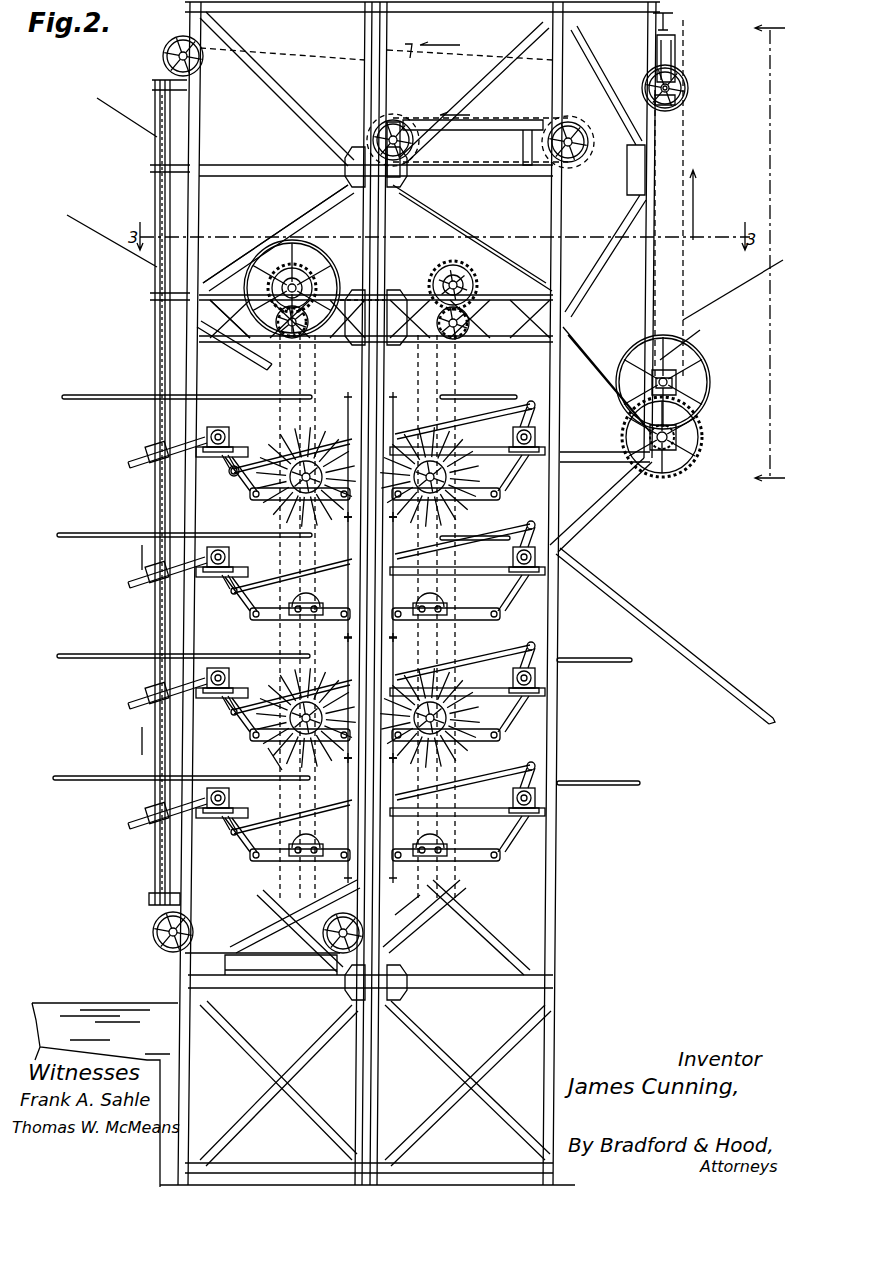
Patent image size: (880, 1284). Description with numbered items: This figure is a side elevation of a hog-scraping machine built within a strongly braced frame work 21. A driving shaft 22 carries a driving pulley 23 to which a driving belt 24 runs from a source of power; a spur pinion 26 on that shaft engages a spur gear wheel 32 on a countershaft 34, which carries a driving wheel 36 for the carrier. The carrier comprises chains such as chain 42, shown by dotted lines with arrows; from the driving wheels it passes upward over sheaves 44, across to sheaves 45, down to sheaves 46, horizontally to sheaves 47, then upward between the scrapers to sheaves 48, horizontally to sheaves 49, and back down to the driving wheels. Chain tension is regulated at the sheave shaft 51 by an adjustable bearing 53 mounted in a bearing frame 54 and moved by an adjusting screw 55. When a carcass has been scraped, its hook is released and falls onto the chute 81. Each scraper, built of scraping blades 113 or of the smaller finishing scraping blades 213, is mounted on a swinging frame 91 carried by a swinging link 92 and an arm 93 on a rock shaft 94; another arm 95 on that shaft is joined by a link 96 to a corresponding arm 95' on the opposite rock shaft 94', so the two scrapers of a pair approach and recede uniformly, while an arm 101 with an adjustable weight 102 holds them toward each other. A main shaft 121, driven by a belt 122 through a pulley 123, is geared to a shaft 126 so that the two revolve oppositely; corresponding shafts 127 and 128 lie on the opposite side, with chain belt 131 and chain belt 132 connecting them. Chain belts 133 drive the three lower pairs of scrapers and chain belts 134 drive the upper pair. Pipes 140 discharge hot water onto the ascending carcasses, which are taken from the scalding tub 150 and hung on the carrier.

The frame work 21 is at (340, 10).
The driving shaft 22 is at (680, 380).
The driving pulley 23 is at (700, 350).
The driving belt 24 is at (733, 290).
The spur pinion 26 is at (694, 336).
The spur gear wheel 32 is at (682, 470).
The countershaft 34 is at (690, 437).
The driving wheel 36 is at (660, 455).
The carrier chain 42 is at (445, 50).
The sheaves 44 is at (688, 80).
The sheaves 45 is at (165, 62).
The sheaves 46 is at (150, 932).
The sheaves 47 is at (335, 920).
The sheaves 48 is at (398, 125).
The sheaves 49 is at (570, 128).
The sheave shaft 51 is at (680, 90).
The adjustable bearing 53 is at (685, 108).
The bearing frame 54 is at (677, 52).
The adjusting screw 55 is at (670, 25).
The chute 81 is at (720, 615).
The swinging frame 91 is at (256, 500).
The swinging link 92 is at (346, 400).
The arm 93 is at (232, 615).
The rock shaft 94 is at (467, 619).
The rock shaft 94' is at (225, 615).
The arm 95 is at (563, 595).
The arm 95' is at (211, 660).
The link 96 is at (250, 590).
The arm 101 is at (128, 465).
The adjustable weight 102 is at (148, 445).
The scraping blade 113 is at (268, 752).
The main shaft 121 is at (322, 258).
The belt 122 is at (275, 222).
The pulley 123 is at (240, 228).
The shaft 126 is at (262, 338).
The shaft 127 is at (455, 262).
The shaft 128 is at (470, 340).
The chain belt 131 is at (326, 275).
The chain belt 132 is at (390, 272).
The chain belts 133 is at (295, 350).
The chain belts 134 is at (320, 390).
The pipes 140 is at (85, 392).
The scalding tub 150 is at (72, 1000).
The scraping blades 213 is at (236, 478).